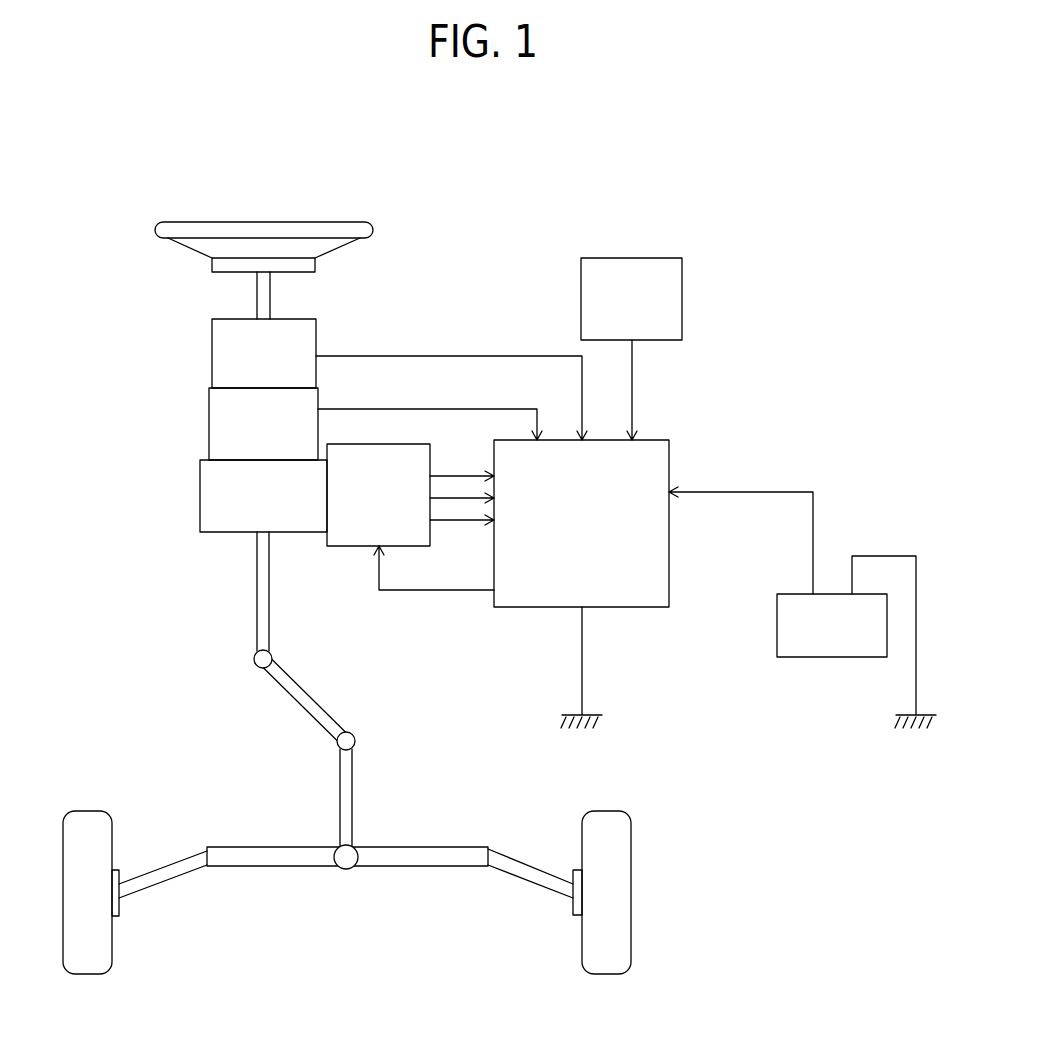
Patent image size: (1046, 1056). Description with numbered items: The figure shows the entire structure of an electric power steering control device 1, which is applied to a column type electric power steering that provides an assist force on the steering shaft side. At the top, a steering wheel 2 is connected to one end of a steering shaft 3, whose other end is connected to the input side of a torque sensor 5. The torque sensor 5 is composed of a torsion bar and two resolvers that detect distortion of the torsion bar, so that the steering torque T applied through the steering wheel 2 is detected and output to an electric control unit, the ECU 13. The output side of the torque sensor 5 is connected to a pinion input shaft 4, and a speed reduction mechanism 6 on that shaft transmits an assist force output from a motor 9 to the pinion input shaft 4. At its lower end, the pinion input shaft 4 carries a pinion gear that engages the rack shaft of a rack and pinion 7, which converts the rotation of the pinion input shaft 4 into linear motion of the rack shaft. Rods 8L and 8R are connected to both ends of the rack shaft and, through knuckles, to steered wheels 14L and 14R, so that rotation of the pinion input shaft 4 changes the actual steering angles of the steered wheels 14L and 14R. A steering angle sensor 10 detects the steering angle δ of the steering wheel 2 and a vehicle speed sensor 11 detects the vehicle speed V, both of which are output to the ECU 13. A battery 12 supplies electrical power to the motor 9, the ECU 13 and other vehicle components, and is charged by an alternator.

The electric power steering control device 1 is at (531, 165).
The steering wheel 2 is at (346, 222).
The steering shaft 3 is at (258, 300).
The pinion input shaft 4 is at (337, 794).
The torque sensor 5 is at (209, 423).
The speed reduction mechanism 6 is at (200, 480).
The rack and pinion 7 is at (250, 846).
The rod 8R is at (165, 862).
The rod 8L is at (520, 864).
The motor 9 is at (350, 548).
The steering angle sensor 10 is at (212, 358).
The vehicle speed sensor 11 is at (684, 290).
The battery 12 is at (808, 660).
The electric control unit (ECU) 13 is at (658, 440).
The steered wheel 14R is at (103, 975).
The steered wheel 14L is at (580, 967).